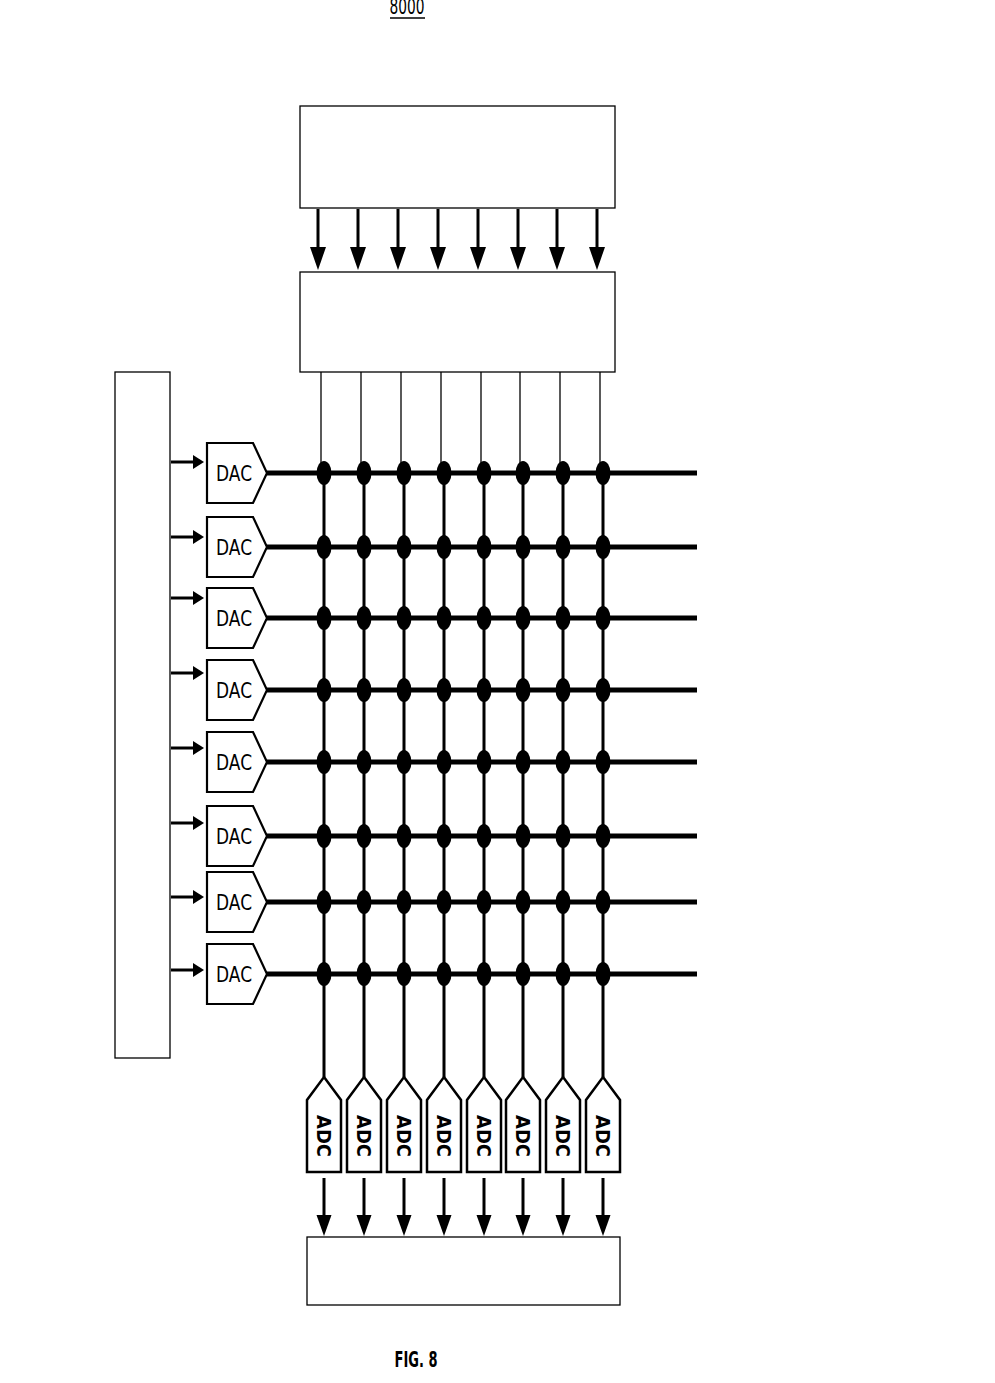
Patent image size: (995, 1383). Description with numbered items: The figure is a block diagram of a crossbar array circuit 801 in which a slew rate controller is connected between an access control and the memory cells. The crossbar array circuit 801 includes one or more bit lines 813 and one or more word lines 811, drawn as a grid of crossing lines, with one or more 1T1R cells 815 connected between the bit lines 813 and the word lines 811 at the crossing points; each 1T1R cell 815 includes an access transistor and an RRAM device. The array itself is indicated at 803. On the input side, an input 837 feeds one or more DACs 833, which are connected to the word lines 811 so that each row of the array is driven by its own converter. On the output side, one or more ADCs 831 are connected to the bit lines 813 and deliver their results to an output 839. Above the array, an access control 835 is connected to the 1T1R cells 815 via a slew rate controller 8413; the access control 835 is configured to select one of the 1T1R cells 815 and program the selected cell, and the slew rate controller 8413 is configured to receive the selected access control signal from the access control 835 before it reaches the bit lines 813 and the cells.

The crossbar array circuit 801 is at (160, 182).
The crossbar array 803 is at (300, 465).
The word lines 811 is at (322, 525).
The bit lines 813 is at (343, 468).
The 1T1R cell 815 is at (319, 470).
The ADCs 831 is at (645, 1083).
The DACs 833 is at (258, 1020).
The access control 835 is at (300, 148).
The input 837 is at (143, 372).
The output 839 is at (620, 1270).
The slew rate controller 8413 is at (300, 322).